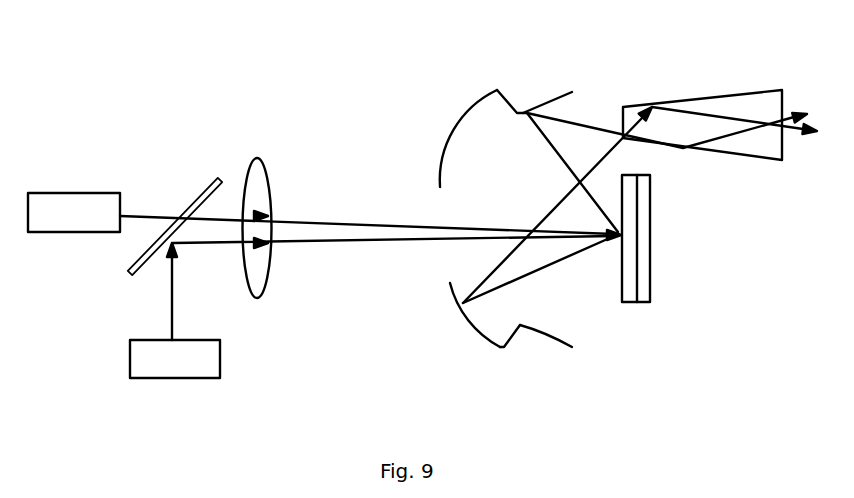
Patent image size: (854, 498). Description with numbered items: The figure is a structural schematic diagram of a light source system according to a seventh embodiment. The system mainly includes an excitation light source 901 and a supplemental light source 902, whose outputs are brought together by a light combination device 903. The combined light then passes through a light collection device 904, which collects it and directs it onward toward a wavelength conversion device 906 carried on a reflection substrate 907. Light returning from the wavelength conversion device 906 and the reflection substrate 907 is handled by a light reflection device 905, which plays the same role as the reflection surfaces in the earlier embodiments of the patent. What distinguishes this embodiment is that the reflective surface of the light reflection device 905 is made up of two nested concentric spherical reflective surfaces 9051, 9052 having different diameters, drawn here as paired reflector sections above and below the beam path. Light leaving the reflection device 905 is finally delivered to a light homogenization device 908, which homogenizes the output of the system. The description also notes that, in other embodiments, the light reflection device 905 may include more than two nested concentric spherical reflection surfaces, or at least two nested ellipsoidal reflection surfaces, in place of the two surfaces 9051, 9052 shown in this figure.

The excitation light source 901 is at (82, 192).
The supplemental light source 902 is at (172, 378).
The light combination device 903 is at (215, 183).
The light collection device 904 is at (262, 163).
The light reflection device 905 is at (470, 225).
The spherical reflective surface 9051 is at (550, 97).
The spherical reflective surface 9052 is at (480, 105).
The wavelength conversion device 906 is at (623, 292).
The reflection substrate 907 is at (643, 292).
The light homogenization device 908 is at (717, 92).